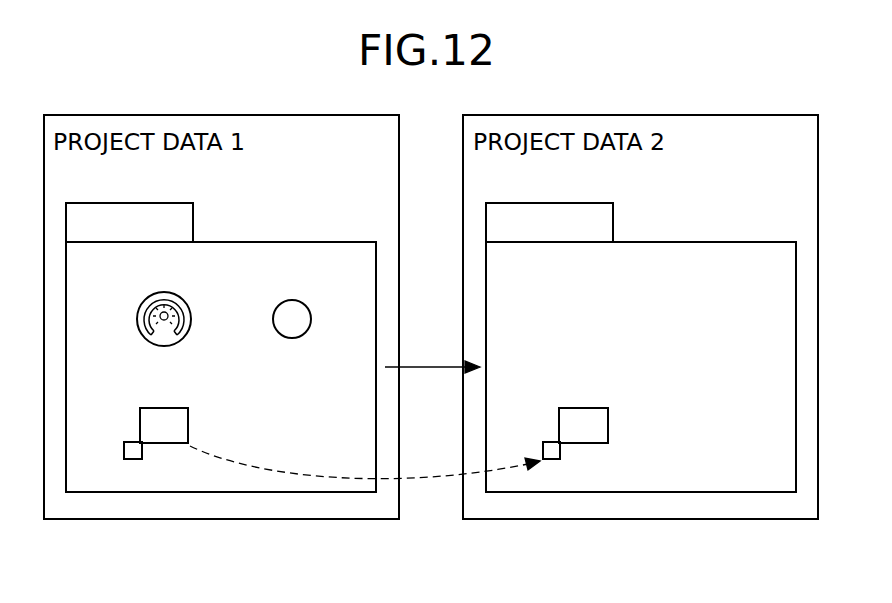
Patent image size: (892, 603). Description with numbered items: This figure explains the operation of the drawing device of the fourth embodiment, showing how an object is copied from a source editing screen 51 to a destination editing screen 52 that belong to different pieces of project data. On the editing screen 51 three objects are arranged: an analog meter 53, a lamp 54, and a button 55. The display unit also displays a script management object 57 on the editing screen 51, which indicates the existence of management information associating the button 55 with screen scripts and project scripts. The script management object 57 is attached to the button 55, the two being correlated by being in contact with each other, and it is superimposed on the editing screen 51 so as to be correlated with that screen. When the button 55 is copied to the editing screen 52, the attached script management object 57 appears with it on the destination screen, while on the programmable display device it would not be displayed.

The editing screen 51 is at (340, 242).
The editing screen 52 is at (760, 242).
The analog meter 53 is at (172, 292).
The lamp 54 is at (311, 310).
The button 55 is at (163, 443).
The script management object 57 is at (132, 459).